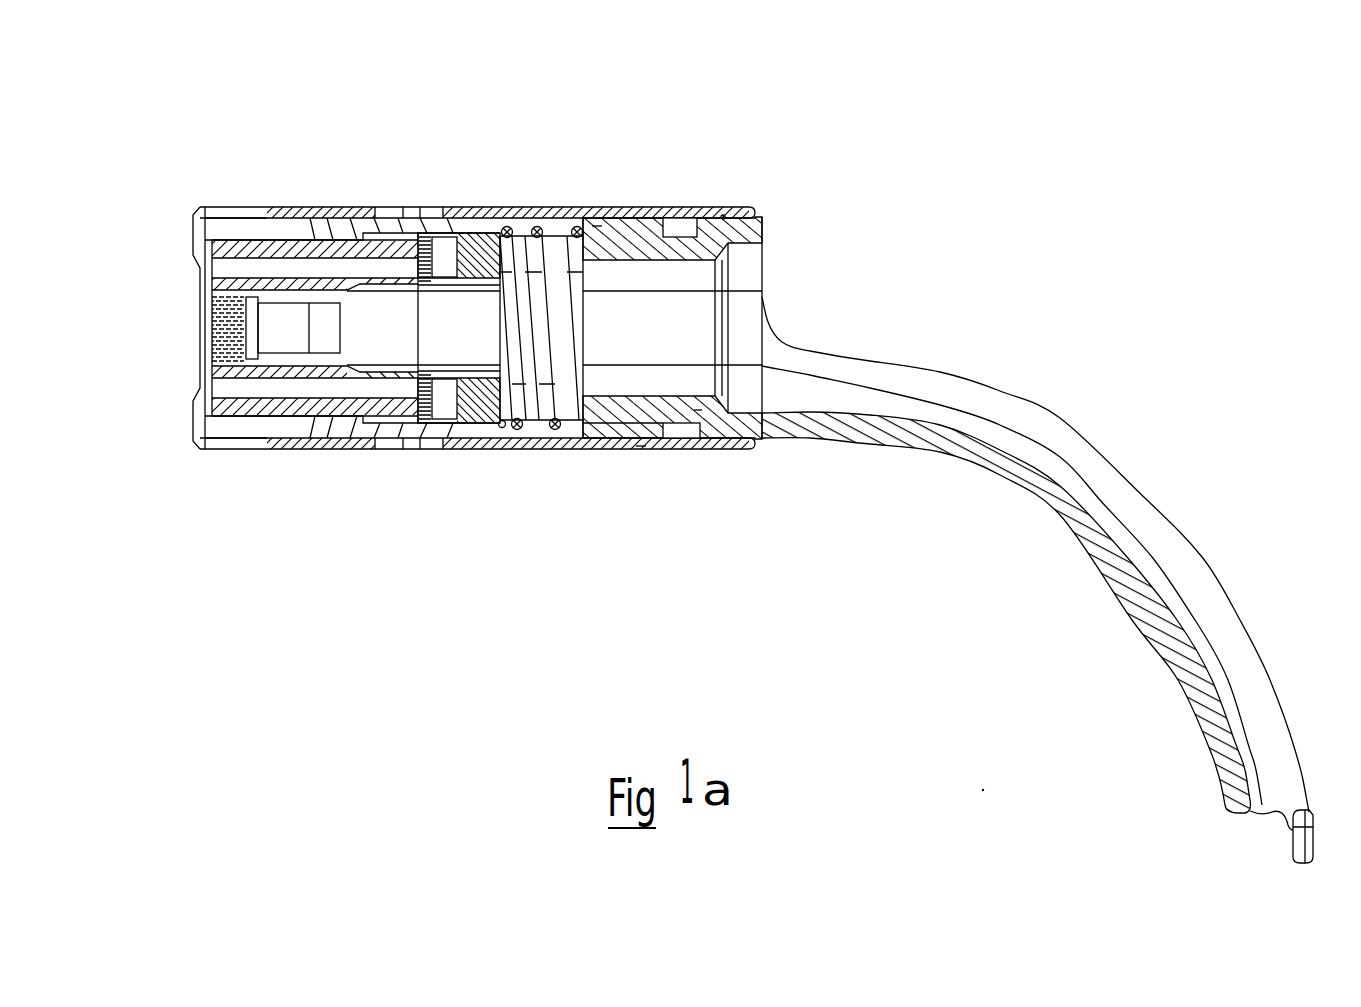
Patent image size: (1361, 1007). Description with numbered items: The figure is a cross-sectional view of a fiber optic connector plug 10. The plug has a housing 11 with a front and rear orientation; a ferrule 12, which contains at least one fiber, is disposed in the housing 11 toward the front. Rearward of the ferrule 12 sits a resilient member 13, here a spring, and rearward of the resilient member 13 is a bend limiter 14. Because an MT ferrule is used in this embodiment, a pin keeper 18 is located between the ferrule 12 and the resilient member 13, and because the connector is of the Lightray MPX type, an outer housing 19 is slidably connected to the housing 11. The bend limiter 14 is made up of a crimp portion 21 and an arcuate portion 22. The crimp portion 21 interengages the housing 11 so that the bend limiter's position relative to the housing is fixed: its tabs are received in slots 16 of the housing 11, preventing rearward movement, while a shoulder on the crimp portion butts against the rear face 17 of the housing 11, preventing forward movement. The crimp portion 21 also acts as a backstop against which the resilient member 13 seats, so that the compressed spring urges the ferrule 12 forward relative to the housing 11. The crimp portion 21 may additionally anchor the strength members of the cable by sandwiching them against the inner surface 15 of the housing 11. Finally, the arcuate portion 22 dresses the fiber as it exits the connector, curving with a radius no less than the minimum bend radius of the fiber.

The fiber optic connector plug 10 is at (883, 188).
The housing 11 is at (415, 445).
The ferrule 12 is at (247, 430).
The resilient member 13 is at (563, 442).
The bend limiter 14 is at (1001, 388).
The inner surface of the housing 15 is at (597, 226).
The slots 16 is at (640, 446).
The rear face of the housing 17 is at (723, 215).
The pin keeper 18 is at (478, 230).
The outer housing 19 is at (358, 204).
The crimp portion 21 is at (698, 410).
The arcuate portion 22 is at (1114, 480).